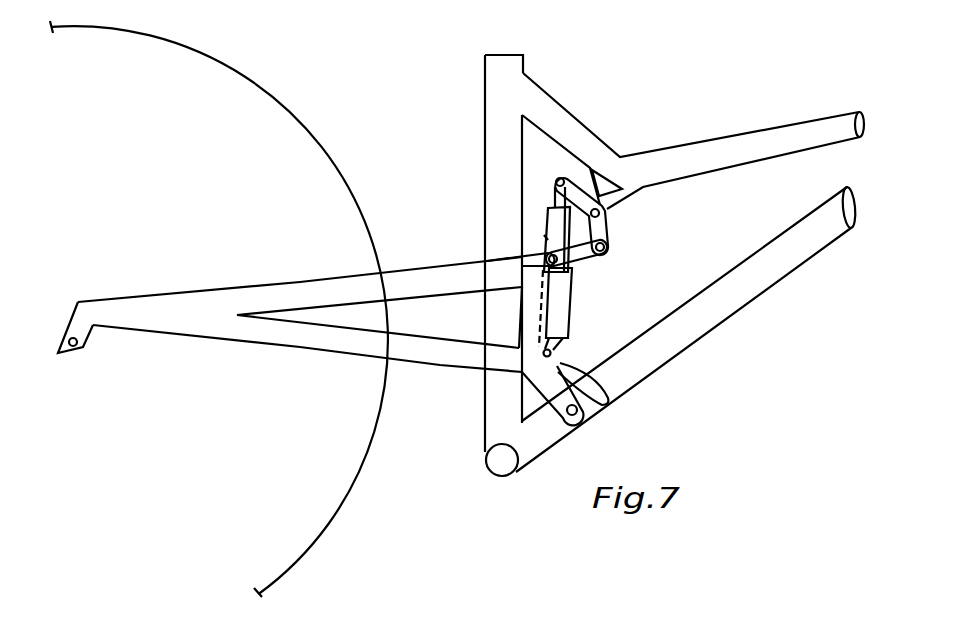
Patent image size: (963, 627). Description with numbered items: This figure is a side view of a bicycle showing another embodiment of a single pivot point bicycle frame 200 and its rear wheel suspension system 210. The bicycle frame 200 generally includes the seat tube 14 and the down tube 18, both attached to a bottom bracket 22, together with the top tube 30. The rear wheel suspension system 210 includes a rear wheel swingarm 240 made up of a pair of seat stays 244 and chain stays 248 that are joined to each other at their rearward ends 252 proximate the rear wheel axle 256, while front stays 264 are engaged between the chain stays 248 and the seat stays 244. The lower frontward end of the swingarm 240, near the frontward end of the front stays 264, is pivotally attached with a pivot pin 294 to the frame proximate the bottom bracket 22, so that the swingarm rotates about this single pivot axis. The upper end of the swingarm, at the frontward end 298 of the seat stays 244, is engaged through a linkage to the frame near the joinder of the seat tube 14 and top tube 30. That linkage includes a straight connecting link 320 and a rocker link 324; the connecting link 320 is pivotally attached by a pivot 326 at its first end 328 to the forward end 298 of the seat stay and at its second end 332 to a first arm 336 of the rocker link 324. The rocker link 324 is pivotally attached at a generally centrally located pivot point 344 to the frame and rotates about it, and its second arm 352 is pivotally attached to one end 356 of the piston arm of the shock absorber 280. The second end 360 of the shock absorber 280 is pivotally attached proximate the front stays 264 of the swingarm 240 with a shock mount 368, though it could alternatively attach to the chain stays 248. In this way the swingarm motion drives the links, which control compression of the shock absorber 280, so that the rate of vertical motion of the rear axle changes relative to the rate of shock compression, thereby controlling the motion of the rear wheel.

The seat tube 14 is at (487, 407).
The down tube 18 is at (742, 265).
The bottom bracket 22 is at (488, 470).
The top tube 30 is at (765, 131).
The bicycle frame 200 is at (299, 84).
The rear wheel suspension system 210 is at (319, 323).
The rear wheel swingarm 240 is at (165, 303).
The seat stays 244 is at (321, 284).
The chain stays 248 is at (293, 351).
The rearward ends 252 is at (161, 322).
The rear wheel axle 256 is at (74, 347).
The front stays 264 is at (528, 311).
The shock absorber 280 is at (571, 312).
The pivot pin 294 is at (581, 421).
The frontward end of the seat stays 298 is at (488, 262).
The connecting link 320 is at (588, 258).
The rocker link 324 is at (635, 154).
The pivot 326 is at (494, 255).
The first end of the connecting link 328 is at (546, 237).
The second end of the connecting link 332 is at (604, 254).
The first arm of the rocker link 336 is at (608, 229).
The pivot point 344 is at (608, 206).
The second arm of the rocker link 352 is at (624, 169).
The end of the piston arm 356 is at (556, 191).
The second end of the shock absorber 360 is at (560, 345).
The shock mount 368 is at (610, 398).